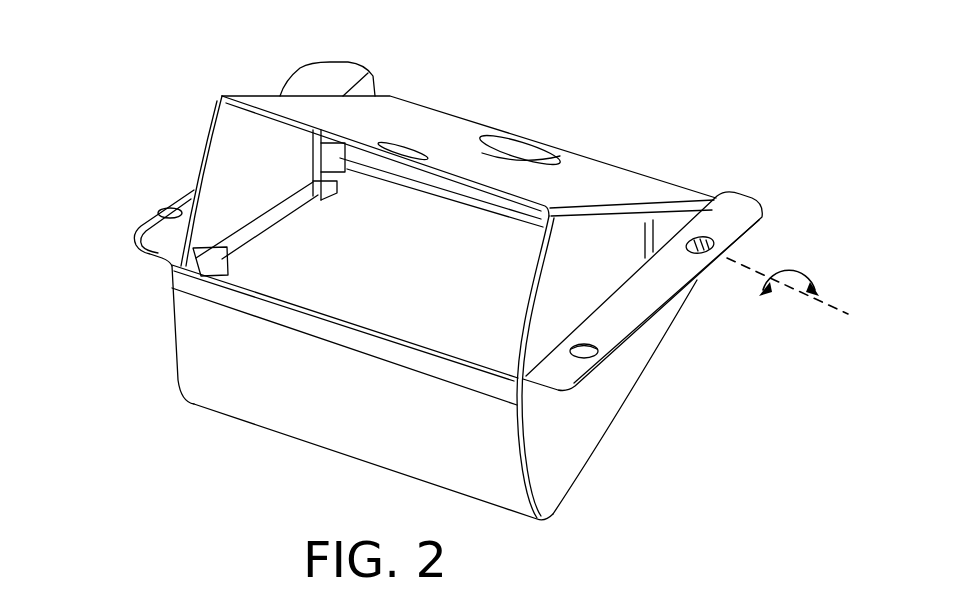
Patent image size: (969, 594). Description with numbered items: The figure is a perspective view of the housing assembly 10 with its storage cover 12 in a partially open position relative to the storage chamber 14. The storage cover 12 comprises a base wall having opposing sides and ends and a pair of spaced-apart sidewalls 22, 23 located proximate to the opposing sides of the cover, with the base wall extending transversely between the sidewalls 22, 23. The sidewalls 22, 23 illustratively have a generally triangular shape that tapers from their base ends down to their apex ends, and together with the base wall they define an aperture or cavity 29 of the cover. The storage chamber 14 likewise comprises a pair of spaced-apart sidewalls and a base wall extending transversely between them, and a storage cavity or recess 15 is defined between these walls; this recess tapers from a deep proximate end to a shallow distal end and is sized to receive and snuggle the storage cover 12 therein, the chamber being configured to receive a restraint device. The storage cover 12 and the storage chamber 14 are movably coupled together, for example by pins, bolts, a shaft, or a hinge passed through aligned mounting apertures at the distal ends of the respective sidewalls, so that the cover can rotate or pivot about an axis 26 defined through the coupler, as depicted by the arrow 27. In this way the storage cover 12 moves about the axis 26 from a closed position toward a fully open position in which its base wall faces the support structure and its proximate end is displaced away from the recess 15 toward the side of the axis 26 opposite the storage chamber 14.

The housing assembly 10 is at (110, 72).
The storage cover 12 is at (612, 178).
The storage chamber 14 is at (178, 334).
The storage cavity or recess 15 is at (450, 326).
The sidewall 22 is at (594, 271).
The sidewall 23 is at (262, 176).
The axis 26 is at (804, 295).
The arrow 27 is at (788, 268).
The aperture or cavity 29 is at (327, 268).